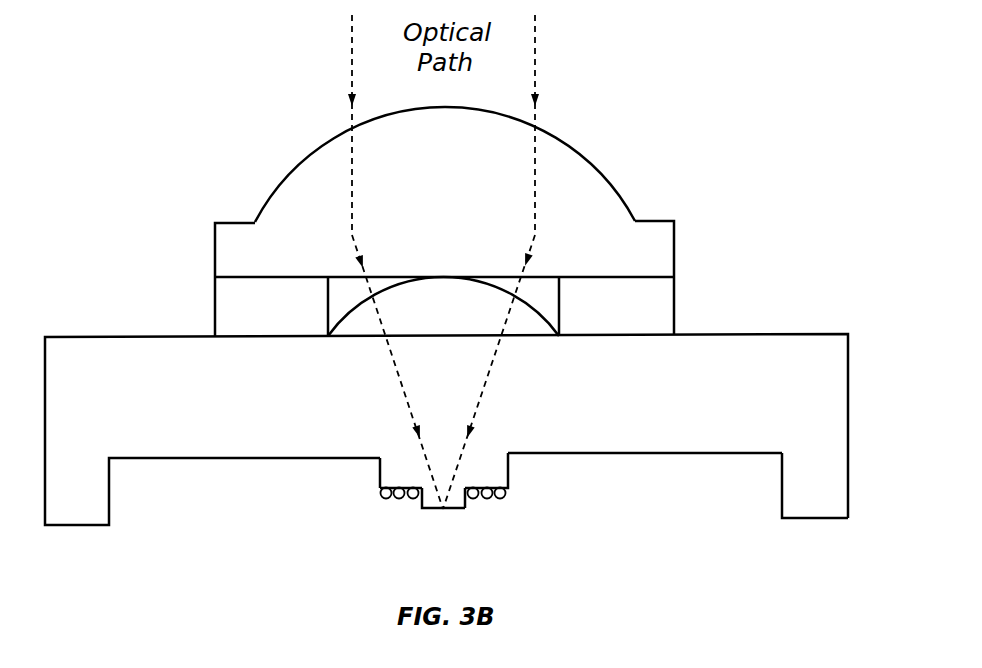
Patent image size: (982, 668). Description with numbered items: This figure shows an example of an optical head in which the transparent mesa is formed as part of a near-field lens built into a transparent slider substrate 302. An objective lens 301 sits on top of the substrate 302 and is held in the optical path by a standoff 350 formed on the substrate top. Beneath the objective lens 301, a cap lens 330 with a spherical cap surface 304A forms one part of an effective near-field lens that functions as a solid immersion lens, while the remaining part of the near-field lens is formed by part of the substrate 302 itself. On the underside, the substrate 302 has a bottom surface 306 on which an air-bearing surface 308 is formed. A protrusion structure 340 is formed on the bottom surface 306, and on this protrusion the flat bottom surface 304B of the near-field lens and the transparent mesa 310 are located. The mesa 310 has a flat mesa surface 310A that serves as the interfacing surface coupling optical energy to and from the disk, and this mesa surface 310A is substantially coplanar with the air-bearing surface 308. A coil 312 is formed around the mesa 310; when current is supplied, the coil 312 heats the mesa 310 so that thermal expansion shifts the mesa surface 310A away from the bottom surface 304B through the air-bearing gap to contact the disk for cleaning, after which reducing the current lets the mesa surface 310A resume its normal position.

The objective lens 301 is at (465, 179).
The slider substrate 302 is at (758, 407).
The spherical cap surface 304A is at (444, 278).
The bottom surface of the near-field lens 304B is at (359, 457).
The bottom surface 306 is at (645, 474).
The air-bearing surface 308 is at (836, 507).
The transparent mesa 310 is at (425, 522).
The mesa surface 310A is at (497, 522).
The coil 312 is at (407, 515).
The cap lens 330 is at (464, 317).
The protrusion structure 340 is at (522, 481).
The standoff 350 is at (292, 317).